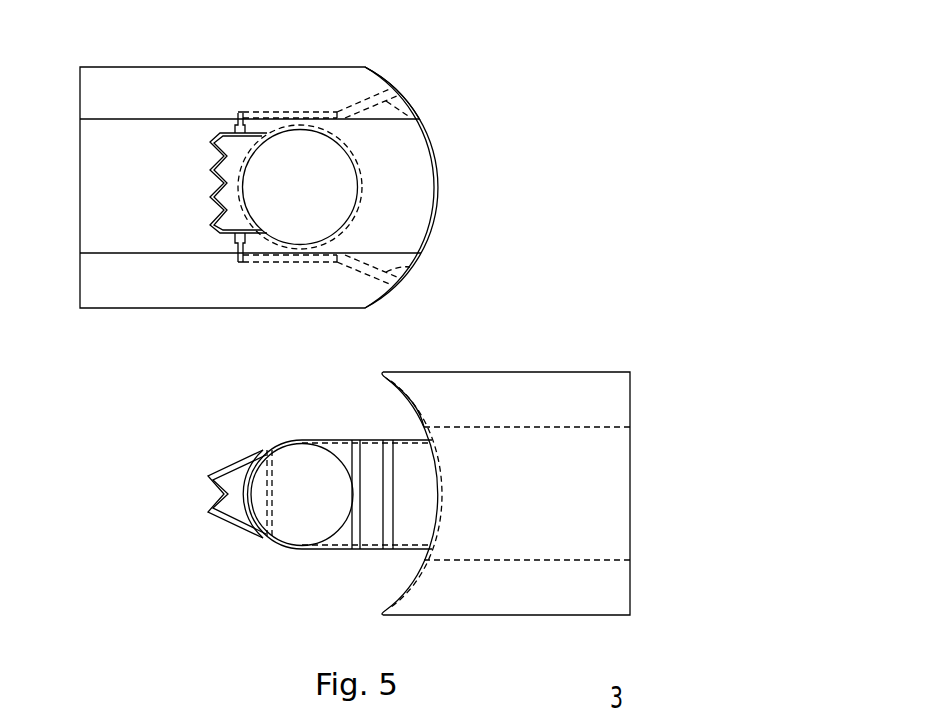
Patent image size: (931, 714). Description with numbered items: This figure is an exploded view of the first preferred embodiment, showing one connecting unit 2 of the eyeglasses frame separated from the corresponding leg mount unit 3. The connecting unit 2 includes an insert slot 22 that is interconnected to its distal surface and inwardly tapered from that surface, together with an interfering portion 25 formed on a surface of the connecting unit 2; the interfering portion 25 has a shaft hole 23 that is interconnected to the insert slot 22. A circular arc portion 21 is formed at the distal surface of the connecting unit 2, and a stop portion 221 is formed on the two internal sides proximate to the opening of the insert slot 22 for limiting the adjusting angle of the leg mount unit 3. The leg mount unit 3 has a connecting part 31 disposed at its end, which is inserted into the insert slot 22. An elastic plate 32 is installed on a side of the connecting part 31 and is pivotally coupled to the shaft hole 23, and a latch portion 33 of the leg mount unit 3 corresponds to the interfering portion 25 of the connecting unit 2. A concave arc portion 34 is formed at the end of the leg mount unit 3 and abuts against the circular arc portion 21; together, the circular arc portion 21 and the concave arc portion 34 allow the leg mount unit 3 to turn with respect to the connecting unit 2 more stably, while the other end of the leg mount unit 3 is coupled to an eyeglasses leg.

The connecting unit 2 is at (128, 60).
The circular arc portion 21 is at (392, 81).
The insert slot 22 is at (410, 177).
The stop portion 221 is at (407, 117).
The shaft hole 23 is at (300, 130).
The interfering portion 25 is at (210, 190).
The leg mount unit 3 is at (596, 352).
The connecting part 31 is at (367, 549).
The elastic plate 32 is at (292, 523).
The latch portion 33 is at (210, 508).
The concave arc portion 34 is at (392, 405).